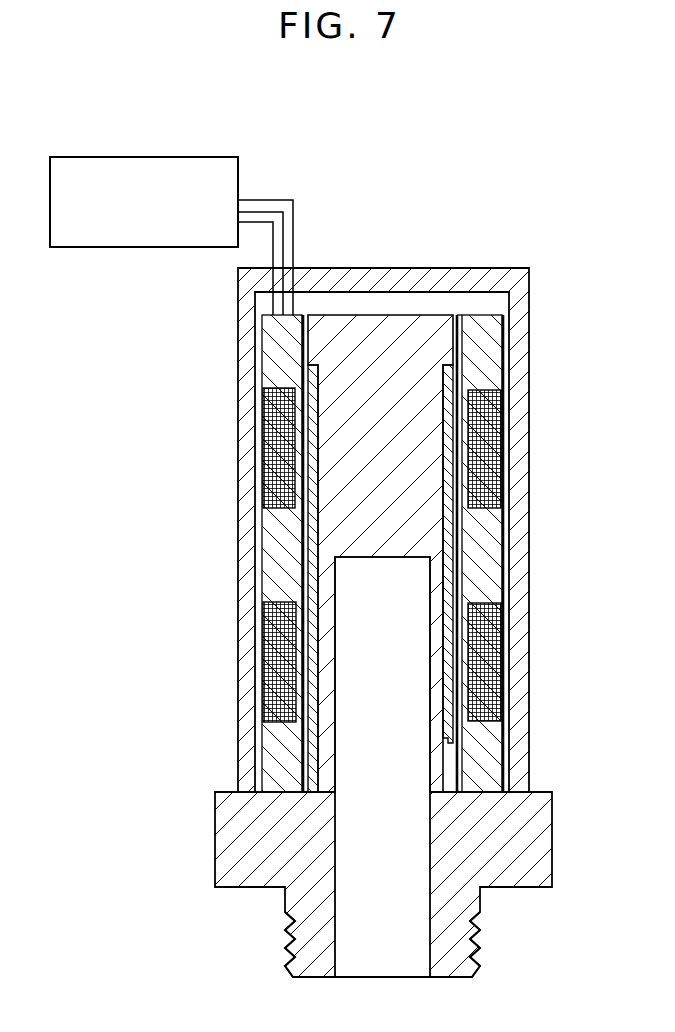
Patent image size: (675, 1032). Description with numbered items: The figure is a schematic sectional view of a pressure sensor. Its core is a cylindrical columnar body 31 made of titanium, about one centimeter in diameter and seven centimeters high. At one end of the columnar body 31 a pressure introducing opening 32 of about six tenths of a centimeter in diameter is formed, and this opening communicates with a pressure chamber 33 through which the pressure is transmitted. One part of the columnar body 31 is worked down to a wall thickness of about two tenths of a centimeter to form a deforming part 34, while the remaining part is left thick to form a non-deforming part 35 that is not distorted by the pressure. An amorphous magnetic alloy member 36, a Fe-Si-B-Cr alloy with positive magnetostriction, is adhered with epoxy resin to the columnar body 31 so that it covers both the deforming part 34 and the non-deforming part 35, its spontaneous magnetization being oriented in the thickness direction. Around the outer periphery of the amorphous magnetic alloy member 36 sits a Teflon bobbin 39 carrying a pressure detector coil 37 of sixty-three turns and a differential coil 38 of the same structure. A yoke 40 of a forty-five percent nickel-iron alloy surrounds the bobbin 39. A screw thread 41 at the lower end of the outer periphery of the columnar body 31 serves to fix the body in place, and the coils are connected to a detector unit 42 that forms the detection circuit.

The columnar body 31 is at (530, 838).
The pressure introducing opening 32 is at (397, 978).
The pressure chamber 33 is at (380, 737).
The deforming part 34 is at (437, 722).
The non-deforming part 35 is at (384, 397).
The amorphous magnetic alloy member 36 is at (445, 522).
The pressure detector coil 37 is at (497, 652).
The differential coil 38 is at (488, 423).
The bobbin 39 is at (483, 338).
The yoke 40 is at (442, 283).
The screw thread 41 is at (455, 932).
The detector unit 42 is at (109, 157).